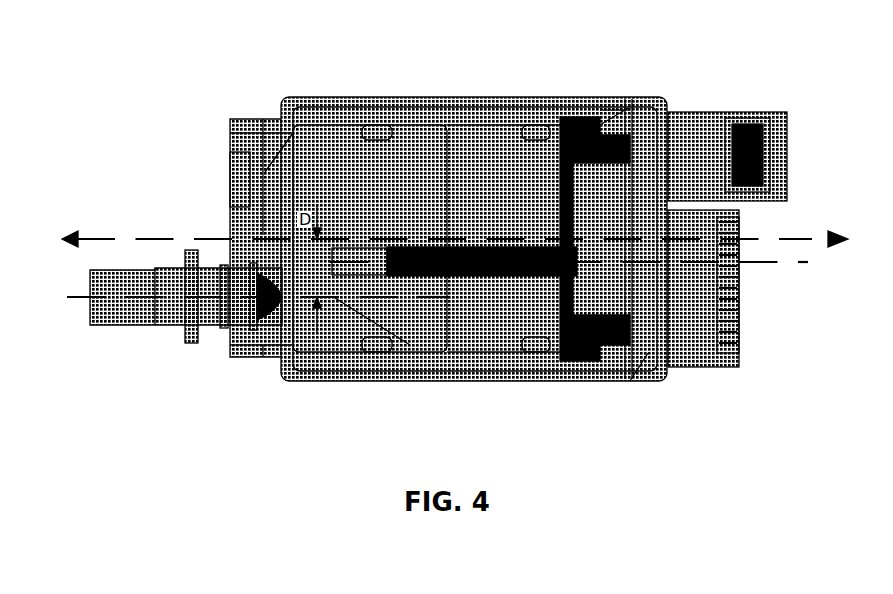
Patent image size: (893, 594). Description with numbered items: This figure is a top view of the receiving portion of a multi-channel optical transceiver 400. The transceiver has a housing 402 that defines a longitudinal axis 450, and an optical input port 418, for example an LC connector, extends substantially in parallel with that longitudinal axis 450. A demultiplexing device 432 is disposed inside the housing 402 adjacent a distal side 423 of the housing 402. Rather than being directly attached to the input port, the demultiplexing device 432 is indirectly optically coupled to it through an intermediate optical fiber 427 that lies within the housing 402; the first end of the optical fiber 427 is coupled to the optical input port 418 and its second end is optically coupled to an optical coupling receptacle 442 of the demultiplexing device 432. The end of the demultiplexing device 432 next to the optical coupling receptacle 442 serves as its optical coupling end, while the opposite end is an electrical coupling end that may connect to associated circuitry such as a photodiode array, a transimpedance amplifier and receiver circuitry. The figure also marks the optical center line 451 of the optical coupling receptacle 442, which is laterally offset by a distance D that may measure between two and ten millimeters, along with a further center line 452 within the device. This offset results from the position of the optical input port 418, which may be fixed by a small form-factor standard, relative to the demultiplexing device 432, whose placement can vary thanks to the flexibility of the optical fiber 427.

The multi-channel optical transceiver 400 is at (270, 73).
The housing 402 is at (617, 98).
The optical fiber 427 is at (355, 125).
The distal side 423 is at (653, 218).
The demultiplexing device 432 is at (410, 247).
The optical coupling receptacle 442 is at (345, 248).
The armature axis 452 is at (462, 265).
The longitudinal axis 450 is at (93, 237).
The optical input port 418 is at (112, 314).
The optical center line 451 is at (150, 299).